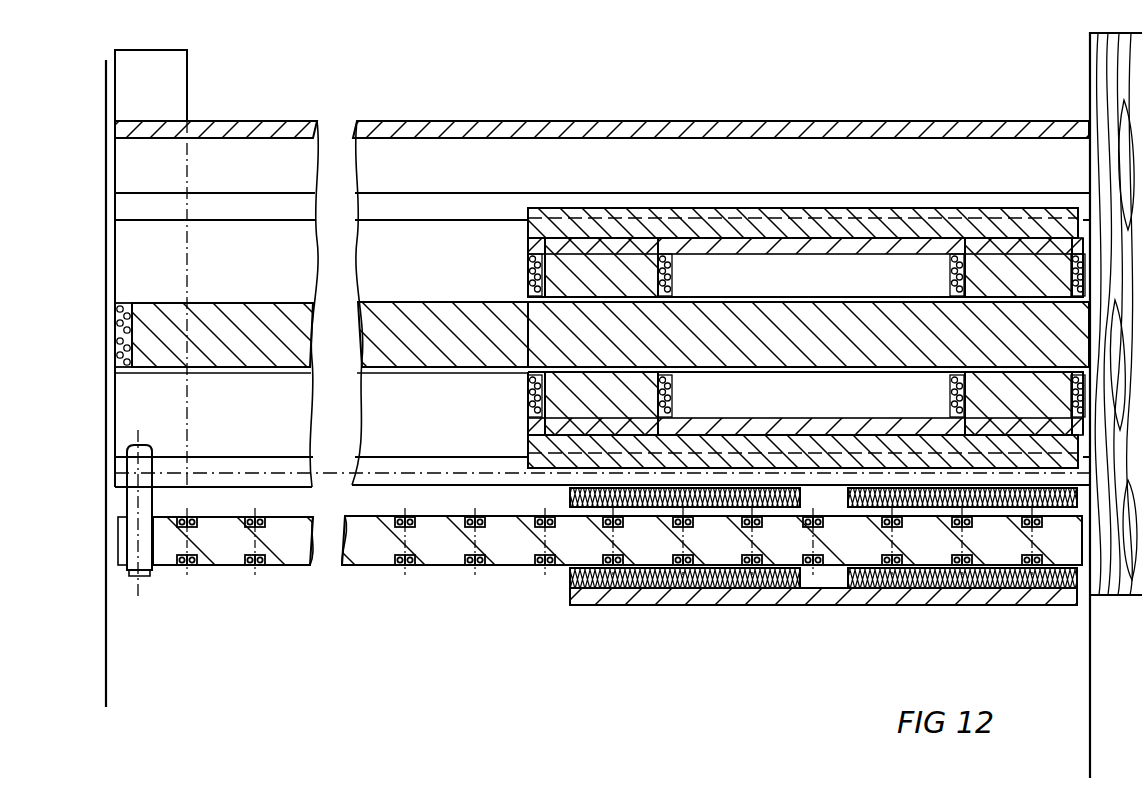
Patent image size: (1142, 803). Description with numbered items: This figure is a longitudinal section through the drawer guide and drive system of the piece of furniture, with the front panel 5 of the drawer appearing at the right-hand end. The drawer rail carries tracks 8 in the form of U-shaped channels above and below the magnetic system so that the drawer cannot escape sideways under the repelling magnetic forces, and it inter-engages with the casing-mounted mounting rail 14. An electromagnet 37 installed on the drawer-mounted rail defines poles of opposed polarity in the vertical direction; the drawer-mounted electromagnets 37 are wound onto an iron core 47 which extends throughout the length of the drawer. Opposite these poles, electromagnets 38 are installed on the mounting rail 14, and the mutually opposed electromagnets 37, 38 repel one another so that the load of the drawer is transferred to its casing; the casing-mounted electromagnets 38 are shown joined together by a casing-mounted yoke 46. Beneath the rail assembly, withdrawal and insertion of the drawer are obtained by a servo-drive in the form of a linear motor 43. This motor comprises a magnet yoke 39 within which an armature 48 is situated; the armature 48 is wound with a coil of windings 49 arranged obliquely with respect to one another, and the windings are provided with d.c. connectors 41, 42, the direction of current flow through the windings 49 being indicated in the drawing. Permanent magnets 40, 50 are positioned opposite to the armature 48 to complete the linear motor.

The front panel 5 is at (1103, 76).
The track 8 is at (705, 330).
The mounting rail 14 is at (862, 208).
The electromagnet 37 is at (131, 322).
The electromagnets 38 is at (527, 268).
The magnet yoke 39 is at (768, 596).
The permanent magnet 40 is at (725, 590).
The d.c. connector 41 is at (808, 527).
The d.c. connector 42 is at (523, 528).
The linear motor 43 is at (475, 585).
The yoke 46 is at (803, 246).
The iron core 47 is at (420, 322).
The armature 48 is at (505, 554).
The windings 49 is at (630, 524).
The permanent magnet 50 is at (735, 489).